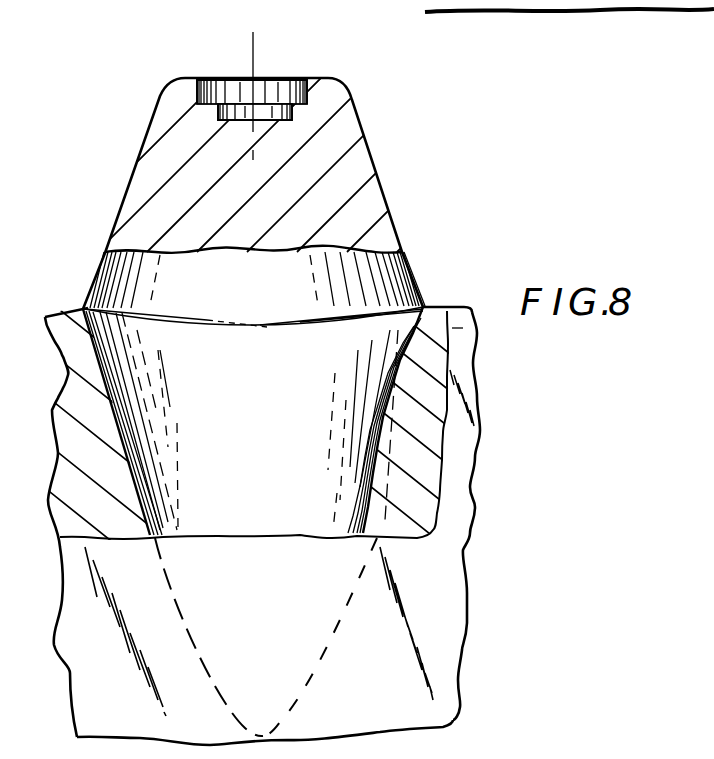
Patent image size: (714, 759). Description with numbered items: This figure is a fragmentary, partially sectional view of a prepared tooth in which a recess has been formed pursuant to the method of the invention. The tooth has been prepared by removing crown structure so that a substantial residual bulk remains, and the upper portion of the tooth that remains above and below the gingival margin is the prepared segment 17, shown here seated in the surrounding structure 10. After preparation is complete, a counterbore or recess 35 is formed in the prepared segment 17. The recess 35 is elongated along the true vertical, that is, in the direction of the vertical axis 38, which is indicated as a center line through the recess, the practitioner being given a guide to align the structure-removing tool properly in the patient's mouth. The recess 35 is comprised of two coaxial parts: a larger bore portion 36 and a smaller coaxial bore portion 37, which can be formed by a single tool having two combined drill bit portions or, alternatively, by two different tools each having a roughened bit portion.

The support body 10 is at (448, 583).
The prepared segment 17 is at (370, 194).
The recess 35 is at (290, 73).
The larger bore portion 36 is at (245, 112).
The smaller coaxial bore portion 37 is at (205, 82).
The vertical axis 38 is at (253, 40).